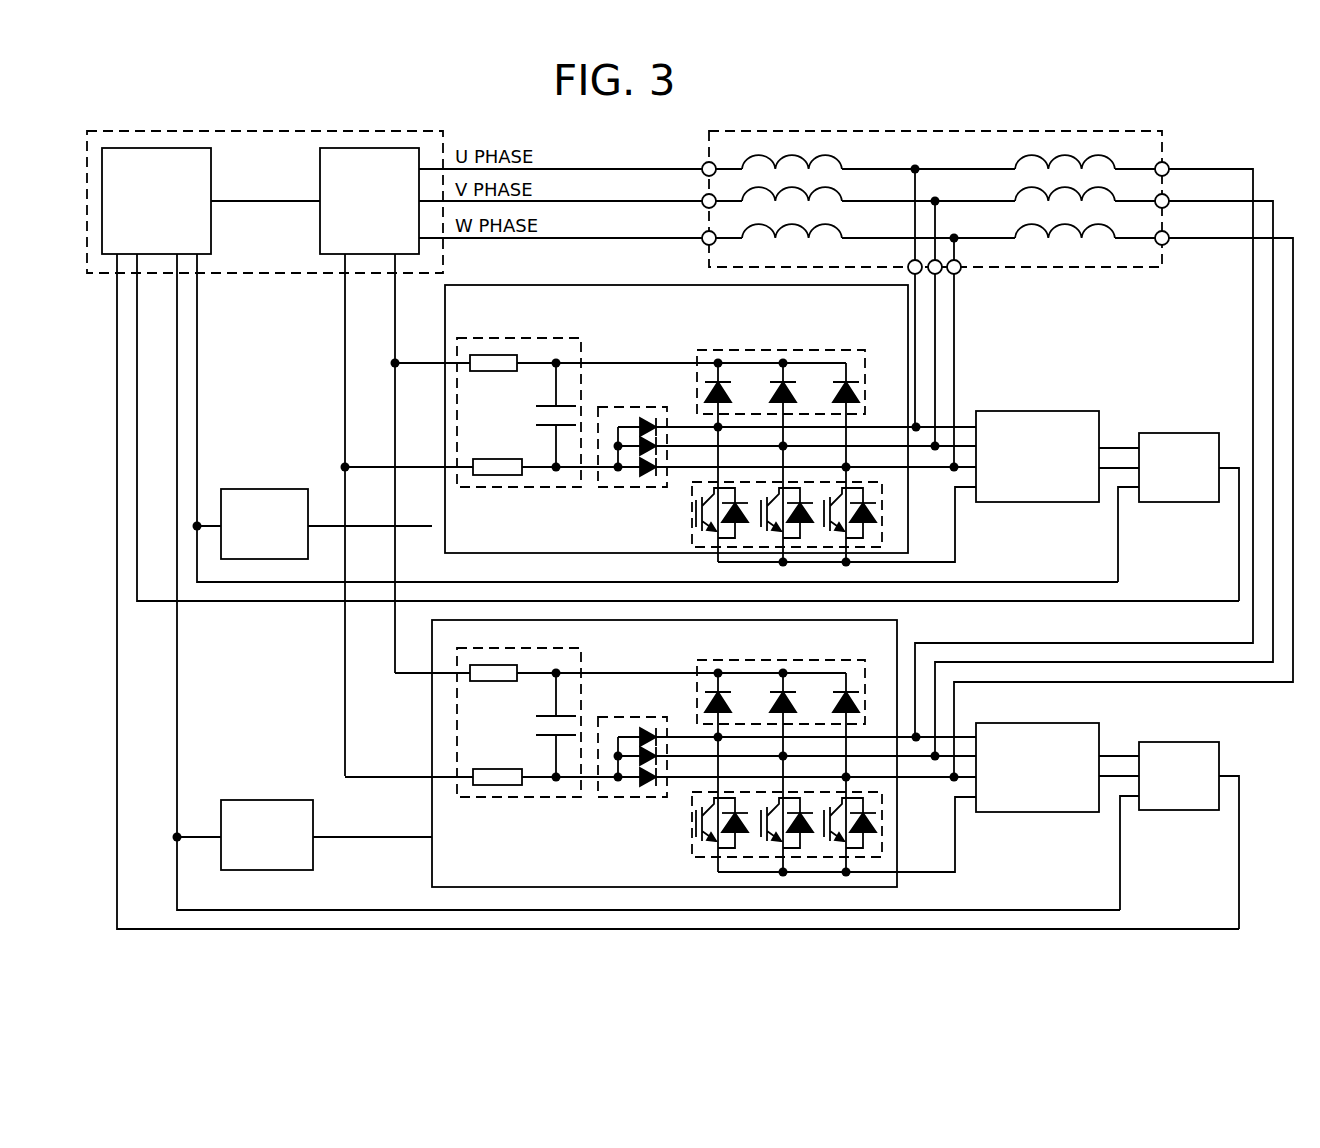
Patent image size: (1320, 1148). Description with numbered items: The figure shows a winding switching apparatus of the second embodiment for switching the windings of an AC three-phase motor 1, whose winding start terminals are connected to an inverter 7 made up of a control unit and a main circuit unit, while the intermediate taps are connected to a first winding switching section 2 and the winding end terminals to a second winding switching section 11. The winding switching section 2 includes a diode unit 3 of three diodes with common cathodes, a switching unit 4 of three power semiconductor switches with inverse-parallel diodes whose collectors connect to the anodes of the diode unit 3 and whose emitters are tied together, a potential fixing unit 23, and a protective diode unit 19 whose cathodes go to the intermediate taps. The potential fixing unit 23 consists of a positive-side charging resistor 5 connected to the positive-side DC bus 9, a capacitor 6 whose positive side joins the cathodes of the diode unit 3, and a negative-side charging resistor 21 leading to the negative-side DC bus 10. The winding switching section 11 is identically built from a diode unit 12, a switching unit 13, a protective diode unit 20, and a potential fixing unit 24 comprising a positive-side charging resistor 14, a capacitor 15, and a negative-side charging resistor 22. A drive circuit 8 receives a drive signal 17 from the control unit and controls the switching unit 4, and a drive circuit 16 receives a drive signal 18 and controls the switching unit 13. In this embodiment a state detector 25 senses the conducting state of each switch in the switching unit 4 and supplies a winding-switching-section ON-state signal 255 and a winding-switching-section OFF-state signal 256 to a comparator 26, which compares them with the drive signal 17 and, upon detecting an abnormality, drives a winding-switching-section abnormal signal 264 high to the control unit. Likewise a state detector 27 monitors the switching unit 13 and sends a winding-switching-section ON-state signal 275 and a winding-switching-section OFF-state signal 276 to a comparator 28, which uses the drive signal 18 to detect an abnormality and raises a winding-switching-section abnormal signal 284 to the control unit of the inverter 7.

The AC three-phase motor 1 is at (763, 131).
The winding switching section 2 is at (786, 520).
The diode unit 3 is at (790, 350).
The switching unit 4 is at (692, 528).
The positive-side charging resistor 5 is at (497, 372).
The capacitor 6 is at (537, 414).
The inverter 7 is at (252, 130).
The drive circuit 8 is at (258, 489).
The positive-side DC bus 9 is at (395, 338).
The negative-side DC bus 10 is at (345, 400).
The winding switching section 11 is at (794, 830).
The diode unit 12 is at (781, 677).
The switching unit 13 is at (764, 833).
The positive-side charging resistor 14 is at (503, 684).
The capacitor 15 is at (536, 725).
The drive circuit 16 is at (258, 800).
The drive signal 17 is at (197, 413).
The drive signal 18 is at (177, 727).
The protective diode unit 19 is at (632, 407).
The protective diode unit 20 is at (787, 742).
The negative-side charging resistor 21 is at (500, 476).
The negative-side charging resistor 22 is at (509, 795).
The potential fixing unit 23 is at (536, 413).
The potential fixing unit 24 is at (536, 723).
The state detector 25 is at (1037, 456).
The comparator 26 is at (1179, 467).
The state detector 27 is at (1037, 767).
The comparator 28 is at (1179, 776).
The winding-switching-section ON-state signal 255 is at (1120, 446).
The winding-switching-section OFF-state signal 256 is at (1116, 490).
The winding-switching-section abnormal signal 264 is at (1238, 525).
The winding-switching-section ON-state signal 275 is at (1120, 755).
The winding-switching-section OFF-state signal 276 is at (1116, 800).
The winding-switching-section abnormal signal 284 is at (1238, 833).